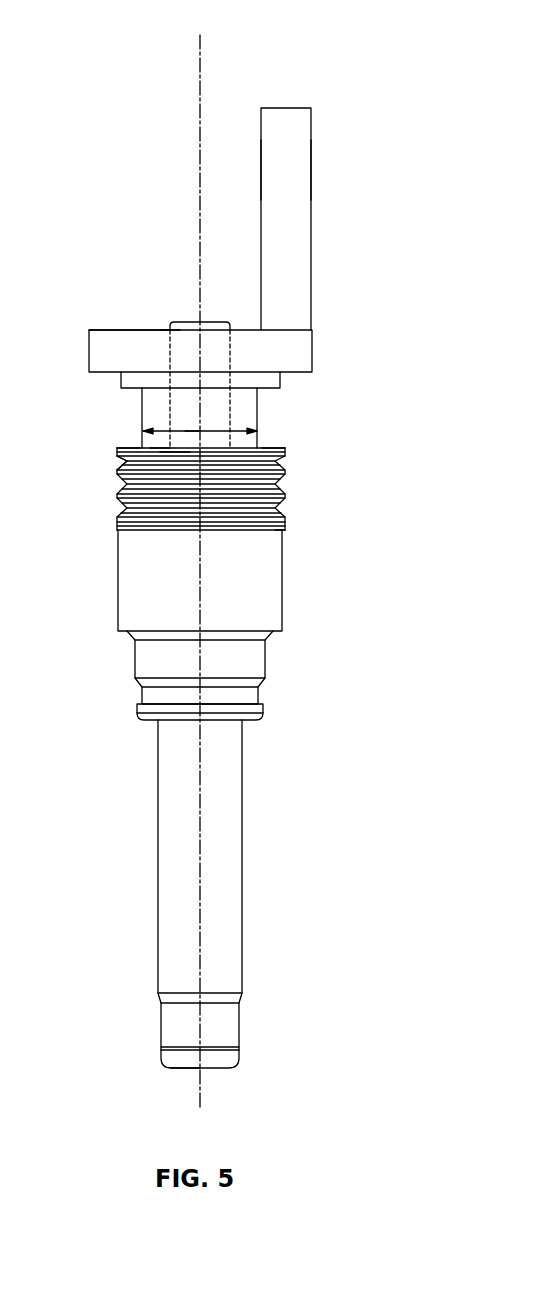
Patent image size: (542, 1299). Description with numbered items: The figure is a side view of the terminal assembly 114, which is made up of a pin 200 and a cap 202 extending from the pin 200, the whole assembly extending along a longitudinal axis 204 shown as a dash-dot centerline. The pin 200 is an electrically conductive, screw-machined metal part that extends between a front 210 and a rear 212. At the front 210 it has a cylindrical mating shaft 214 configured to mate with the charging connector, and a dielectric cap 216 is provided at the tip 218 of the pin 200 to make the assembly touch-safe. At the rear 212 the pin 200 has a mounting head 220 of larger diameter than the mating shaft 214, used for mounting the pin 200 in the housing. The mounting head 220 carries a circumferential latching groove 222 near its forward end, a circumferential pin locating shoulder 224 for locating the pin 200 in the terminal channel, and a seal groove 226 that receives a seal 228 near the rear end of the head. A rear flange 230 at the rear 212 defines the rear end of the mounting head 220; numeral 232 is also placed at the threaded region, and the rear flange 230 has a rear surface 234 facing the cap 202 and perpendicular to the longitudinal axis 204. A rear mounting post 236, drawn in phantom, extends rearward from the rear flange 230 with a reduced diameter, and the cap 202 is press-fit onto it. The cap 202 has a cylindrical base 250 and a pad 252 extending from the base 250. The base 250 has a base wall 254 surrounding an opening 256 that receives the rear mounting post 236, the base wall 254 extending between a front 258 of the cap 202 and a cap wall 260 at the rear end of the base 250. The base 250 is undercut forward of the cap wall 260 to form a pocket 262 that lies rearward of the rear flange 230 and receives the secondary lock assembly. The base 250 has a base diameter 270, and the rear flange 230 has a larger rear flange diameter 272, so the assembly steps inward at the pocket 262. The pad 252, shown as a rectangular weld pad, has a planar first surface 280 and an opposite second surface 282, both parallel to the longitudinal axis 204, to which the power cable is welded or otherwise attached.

The terminal assembly 114 is at (346, 49).
The pin 200 is at (255, 660).
The cap 202 is at (298, 350).
The longitudinal axis 204 is at (200, 62).
The front 210 is at (210, 1070).
The rear 212 is at (122, 452).
The mating shaft 214 is at (232, 893).
The cap 216 is at (230, 1026).
The tip 218 is at (182, 1068).
The mounting head 220 is at (273, 580).
The latching groove 222 is at (139, 697).
The pin locating shoulder 224 is at (129, 643).
The seal groove 226 is at (285, 530).
The seal 228 is at (279, 493).
The rear flange 230 is at (281, 452).
The thread root 232 is at (120, 462).
The rear surface 234 is at (274, 447).
The rear mounting post 236 is at (170, 327).
The base 250 is at (158, 417).
The pad 252 is at (290, 200).
The base wall 254 is at (142, 405).
The opening 256 is at (168, 328).
The front 258 is at (172, 455).
The cap wall 260 is at (118, 330).
The pocket 262 is at (295, 388).
The base diameter 270 is at (192, 432).
The rear flange diameter 272 is at (160, 448).
The first surface 280 is at (260, 141).
The second surface 282 is at (312, 143).